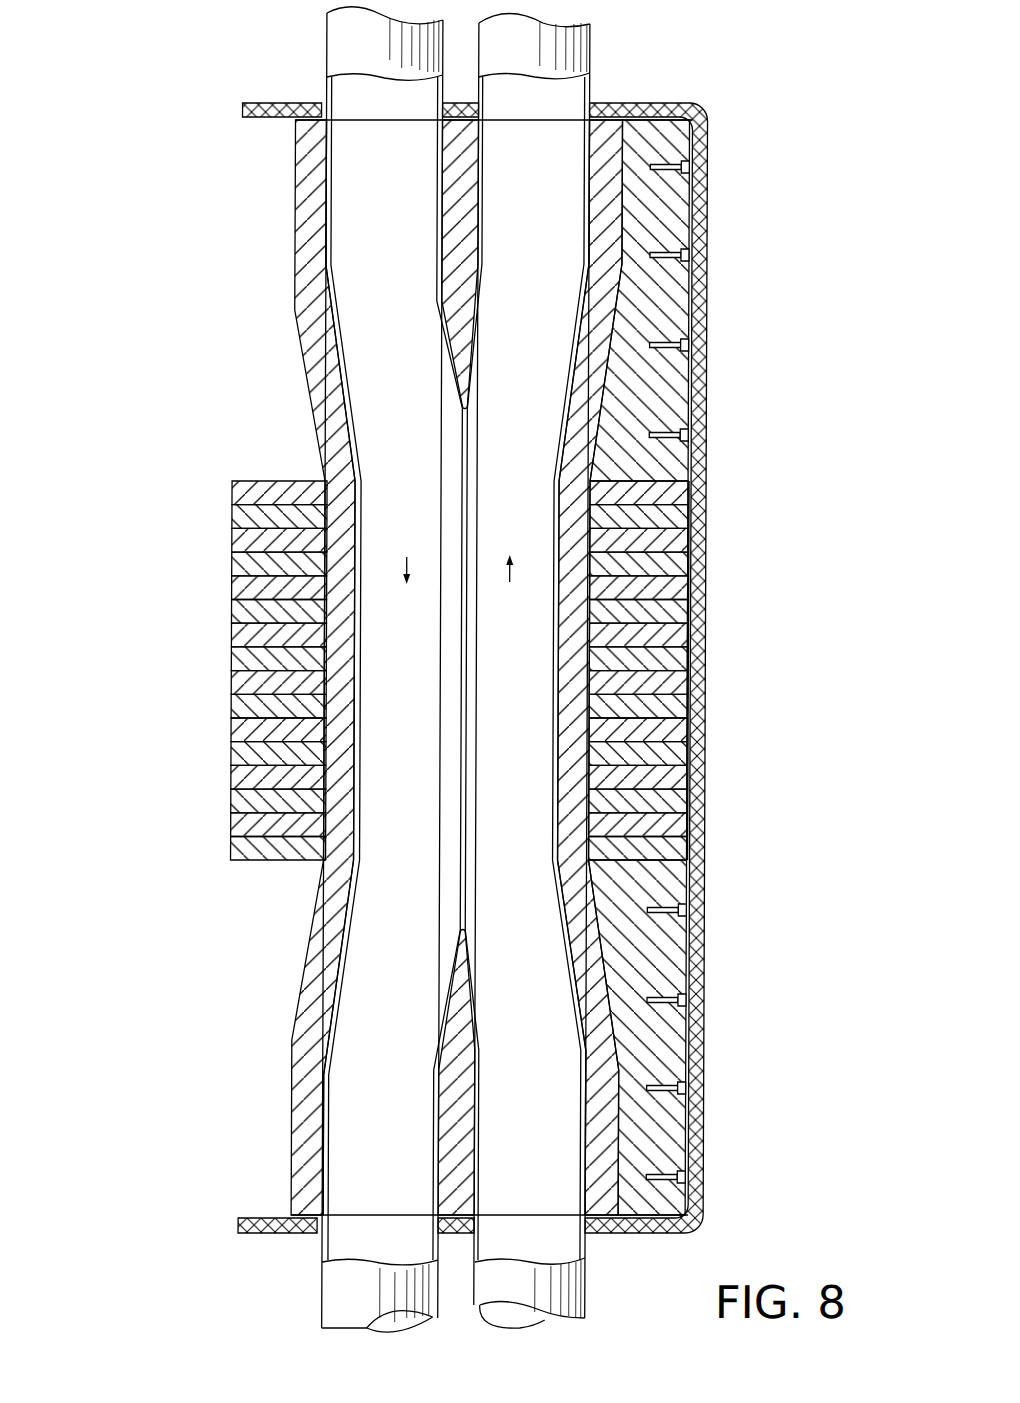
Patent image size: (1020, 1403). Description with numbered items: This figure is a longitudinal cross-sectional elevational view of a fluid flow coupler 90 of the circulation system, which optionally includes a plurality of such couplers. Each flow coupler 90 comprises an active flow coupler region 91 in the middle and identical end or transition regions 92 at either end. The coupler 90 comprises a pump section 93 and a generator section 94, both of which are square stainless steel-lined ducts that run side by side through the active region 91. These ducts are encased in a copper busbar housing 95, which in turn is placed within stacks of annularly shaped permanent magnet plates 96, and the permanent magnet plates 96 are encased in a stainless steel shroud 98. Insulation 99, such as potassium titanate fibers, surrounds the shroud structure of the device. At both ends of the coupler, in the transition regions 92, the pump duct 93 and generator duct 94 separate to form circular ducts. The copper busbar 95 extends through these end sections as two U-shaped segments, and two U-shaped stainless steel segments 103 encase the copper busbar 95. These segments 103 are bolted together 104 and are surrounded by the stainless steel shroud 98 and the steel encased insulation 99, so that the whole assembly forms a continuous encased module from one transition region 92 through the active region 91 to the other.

The flow coupler 90 is at (517, 669).
The flow coupler region 91 is at (130, 470).
The transition regions 92 is at (130, 468).
The pump section 93 is at (426, 757).
The generator section 94 is at (523, 757).
The copper busbar housing 95 is at (317, 932).
The permanent magnet plates 96 is at (671, 563).
The stainless steel shroud 98 is at (690, 656).
The insulation 99 is at (705, 712).
The U-shaped stainless steel segments 103 is at (667, 224).
The bolts 104 is at (690, 256).